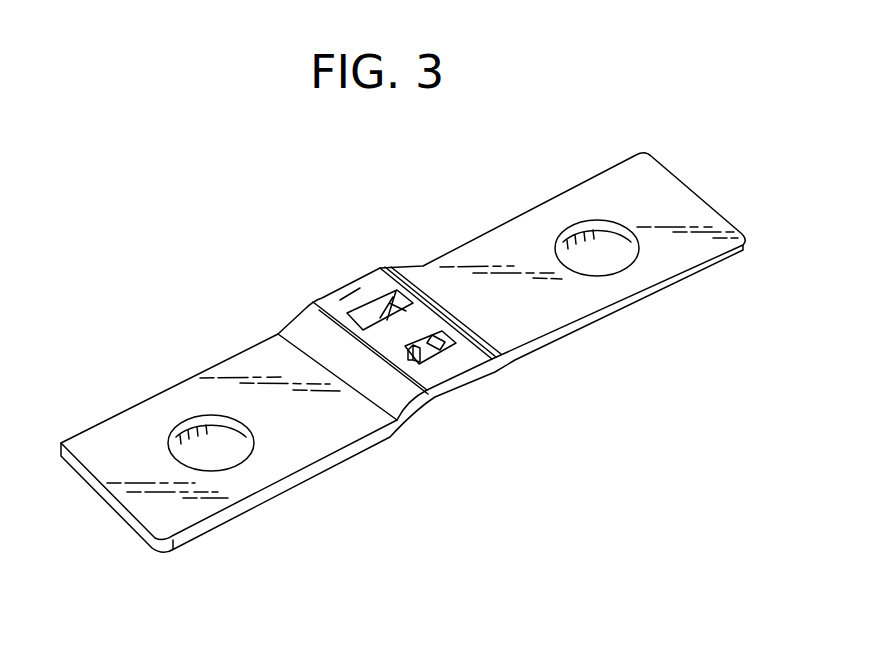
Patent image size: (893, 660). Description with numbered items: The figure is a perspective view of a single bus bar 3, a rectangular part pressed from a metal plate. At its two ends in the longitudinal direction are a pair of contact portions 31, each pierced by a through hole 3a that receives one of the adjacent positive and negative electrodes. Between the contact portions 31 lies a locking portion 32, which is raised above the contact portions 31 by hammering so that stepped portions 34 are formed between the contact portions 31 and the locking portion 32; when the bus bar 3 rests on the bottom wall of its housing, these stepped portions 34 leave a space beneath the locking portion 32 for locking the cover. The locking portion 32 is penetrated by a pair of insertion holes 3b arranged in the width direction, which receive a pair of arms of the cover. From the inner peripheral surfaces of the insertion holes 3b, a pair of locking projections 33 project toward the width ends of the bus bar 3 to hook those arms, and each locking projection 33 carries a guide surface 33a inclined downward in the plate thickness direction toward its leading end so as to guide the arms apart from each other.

The bus bar 3 is at (654, 141).
The contact portion 31 is at (226, 380).
The through hole 3a is at (216, 467).
The locking portion 32 is at (355, 295).
The locking projection 33 is at (402, 292).
The guide surface 33a is at (427, 360).
The stepped portion 34 is at (313, 330).
The insertion hole 3b is at (413, 362).